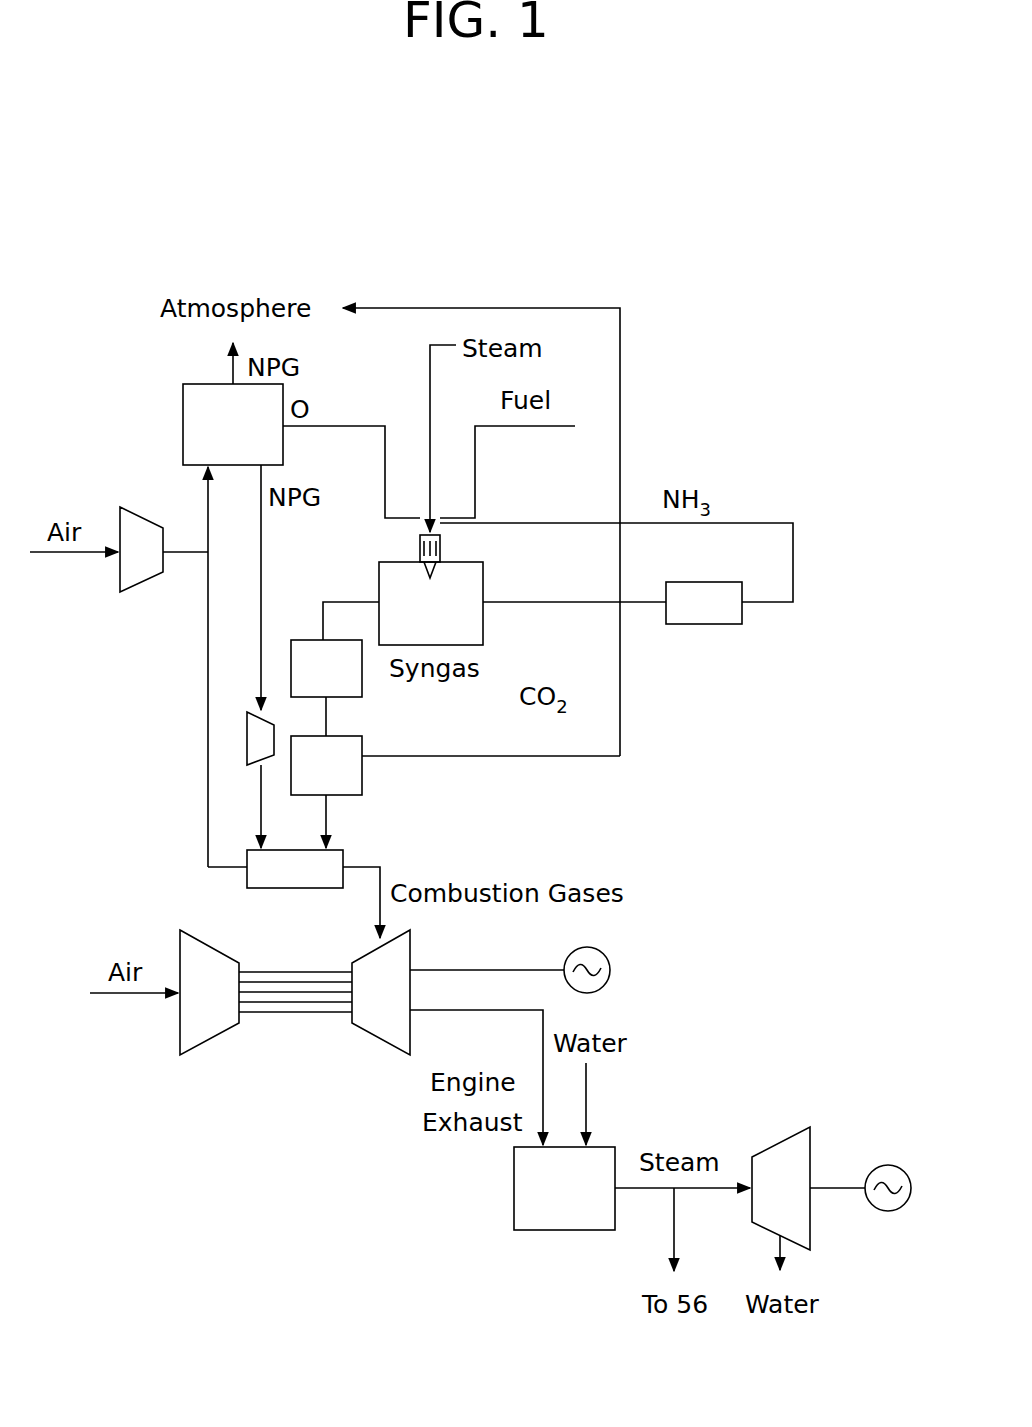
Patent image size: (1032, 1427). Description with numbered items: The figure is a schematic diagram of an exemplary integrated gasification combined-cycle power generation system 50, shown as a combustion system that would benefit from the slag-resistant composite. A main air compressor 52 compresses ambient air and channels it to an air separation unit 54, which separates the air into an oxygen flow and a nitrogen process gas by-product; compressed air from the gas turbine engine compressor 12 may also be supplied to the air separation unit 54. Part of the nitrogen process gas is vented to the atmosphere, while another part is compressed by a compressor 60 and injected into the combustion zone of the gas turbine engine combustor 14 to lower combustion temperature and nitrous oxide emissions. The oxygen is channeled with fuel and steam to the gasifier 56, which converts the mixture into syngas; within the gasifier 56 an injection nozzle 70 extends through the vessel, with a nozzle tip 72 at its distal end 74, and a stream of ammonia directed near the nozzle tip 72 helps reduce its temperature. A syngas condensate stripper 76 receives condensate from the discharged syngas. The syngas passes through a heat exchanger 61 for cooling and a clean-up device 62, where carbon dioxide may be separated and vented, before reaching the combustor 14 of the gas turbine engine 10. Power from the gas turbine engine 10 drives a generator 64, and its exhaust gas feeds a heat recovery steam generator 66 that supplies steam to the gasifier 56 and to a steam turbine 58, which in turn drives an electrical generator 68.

The gas turbine engine 10 is at (176, 903).
The gas turbine engine compressor 12 is at (213, 1040).
The gas turbine engine combustor 14 is at (300, 888).
The IGCC power generation system 50 is at (140, 210).
The main air compressor 52 is at (136, 592).
The air separation unit 54 is at (183, 420).
The gasifier 56 is at (483, 588).
The steam turbine 58 is at (782, 1140).
The compressor 60 is at (252, 715).
The heat exchanger 61 is at (362, 700).
The clean-up device 62 is at (346, 797).
The generator 64 is at (605, 953).
The heat recovery steam generator 66 is at (530, 1231).
The electrical generator 68 is at (888, 1165).
The injection nozzle 70 is at (442, 546).
The nozzle tip 72 is at (430, 575).
The distal end 74 is at (428, 574).
The syngas condensate stripper 76 is at (700, 624).